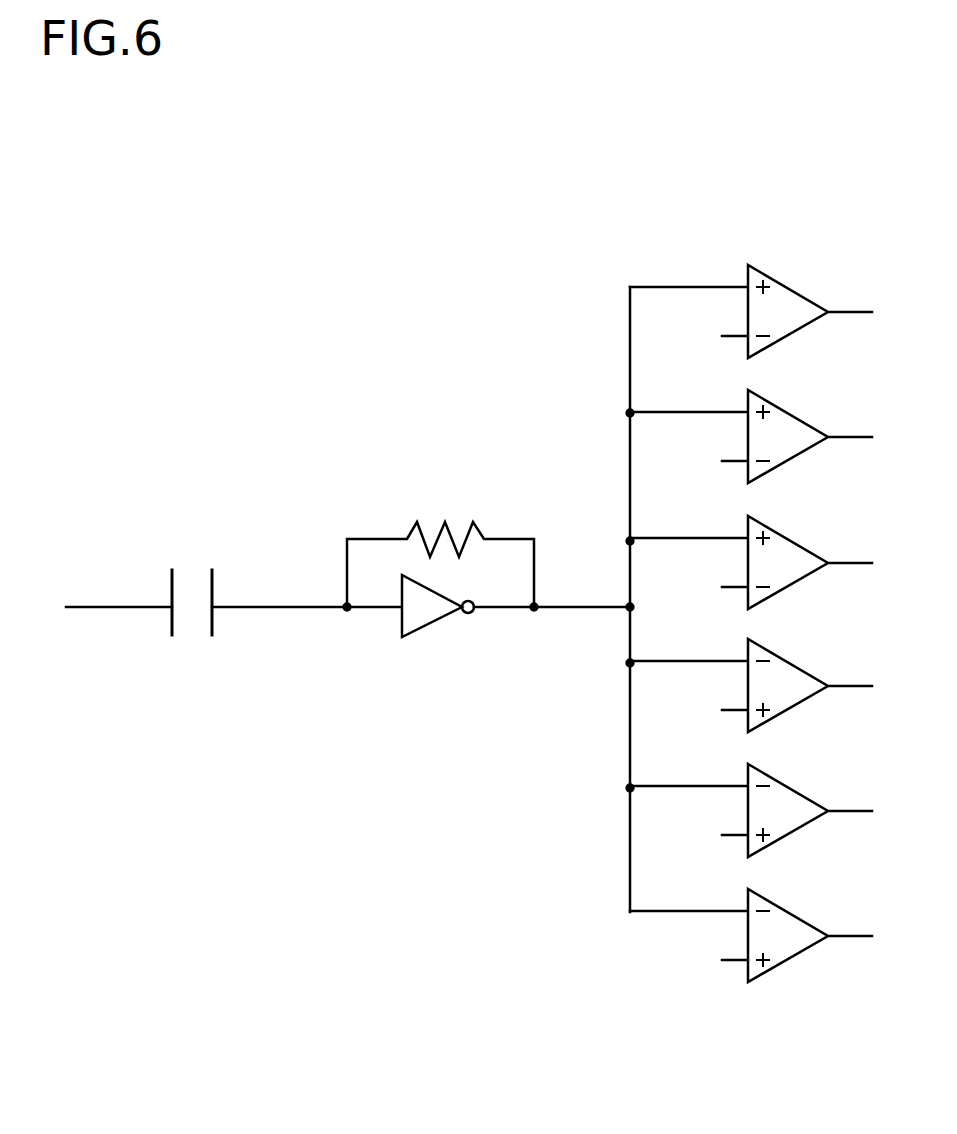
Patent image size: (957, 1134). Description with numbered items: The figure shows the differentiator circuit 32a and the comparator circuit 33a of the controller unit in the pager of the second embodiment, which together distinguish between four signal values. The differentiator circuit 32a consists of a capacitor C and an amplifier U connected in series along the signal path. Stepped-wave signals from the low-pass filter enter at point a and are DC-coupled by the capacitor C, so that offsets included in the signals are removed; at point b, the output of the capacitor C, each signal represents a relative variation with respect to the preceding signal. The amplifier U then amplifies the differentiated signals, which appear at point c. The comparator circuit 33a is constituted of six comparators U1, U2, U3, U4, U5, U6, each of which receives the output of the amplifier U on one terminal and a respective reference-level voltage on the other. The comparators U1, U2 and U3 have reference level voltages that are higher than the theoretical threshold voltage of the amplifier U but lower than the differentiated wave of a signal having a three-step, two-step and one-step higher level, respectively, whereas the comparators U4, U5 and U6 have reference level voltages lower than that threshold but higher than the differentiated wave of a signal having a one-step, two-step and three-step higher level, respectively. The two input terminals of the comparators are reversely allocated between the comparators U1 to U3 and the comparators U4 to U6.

The differentiator circuit 32a is at (307, 460).
The comparator circuit 33a is at (734, 181).
The capacitor C is at (192, 622).
The amplifier U is at (447, 664).
The point a is at (129, 620).
The point b is at (292, 620).
The point c is at (586, 620).
The comparator U1 is at (751, 305).
The comparator U2 is at (751, 430).
The comparator U3 is at (751, 556).
The comparator U4 is at (751, 679).
The comparator U5 is at (751, 804).
The comparator U6 is at (751, 929).